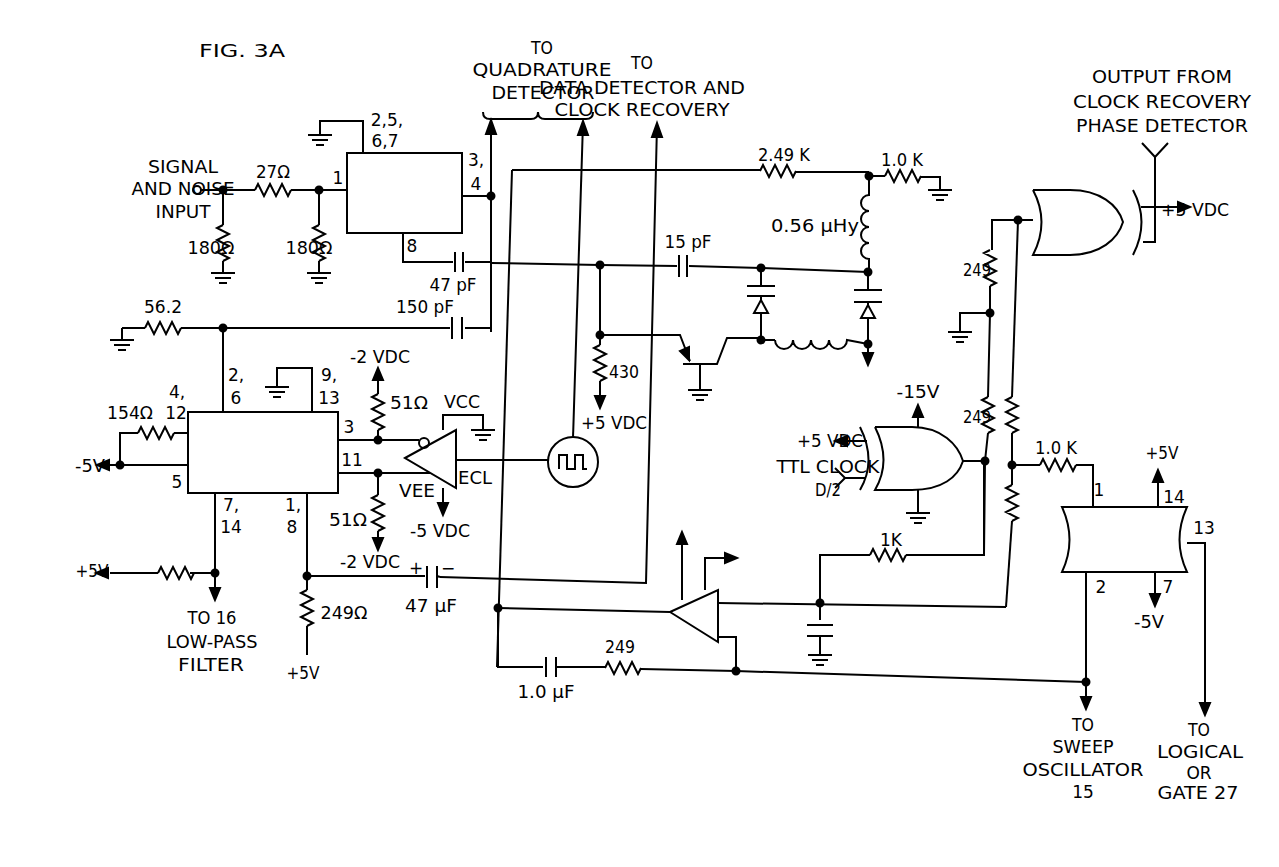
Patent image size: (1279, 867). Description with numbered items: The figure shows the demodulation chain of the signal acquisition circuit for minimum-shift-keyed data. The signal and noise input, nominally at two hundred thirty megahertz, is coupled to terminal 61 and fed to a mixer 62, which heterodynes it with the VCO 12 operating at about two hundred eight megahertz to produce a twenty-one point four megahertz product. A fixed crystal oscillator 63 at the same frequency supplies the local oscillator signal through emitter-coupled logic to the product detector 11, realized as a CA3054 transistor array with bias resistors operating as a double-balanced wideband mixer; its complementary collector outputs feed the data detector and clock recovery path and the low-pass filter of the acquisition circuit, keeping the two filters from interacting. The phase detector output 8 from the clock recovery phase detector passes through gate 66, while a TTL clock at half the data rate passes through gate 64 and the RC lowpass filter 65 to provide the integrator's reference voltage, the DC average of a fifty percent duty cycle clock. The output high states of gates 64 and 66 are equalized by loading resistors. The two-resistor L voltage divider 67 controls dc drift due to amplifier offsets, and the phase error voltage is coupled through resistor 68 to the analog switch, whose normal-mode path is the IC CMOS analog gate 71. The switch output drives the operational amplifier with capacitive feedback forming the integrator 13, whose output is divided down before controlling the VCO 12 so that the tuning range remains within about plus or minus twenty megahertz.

The phase detector output 8 is at (1160, 246).
The product detector 11 is at (253, 565).
The VCO 12 is at (741, 382).
The integrator 13 is at (666, 657).
The terminal 61 is at (202, 177).
The mixer 62 is at (443, 149).
The crystal oscillator 63 is at (552, 444).
The gate 64 is at (945, 492).
The RC lowpass filter 65 is at (836, 617).
The gate 66 is at (1085, 259).
The two-resistor L voltage divider 67 is at (1022, 410).
The resistor 68 is at (1053, 480).
The IC CMOS analog gate 71 is at (1062, 583).